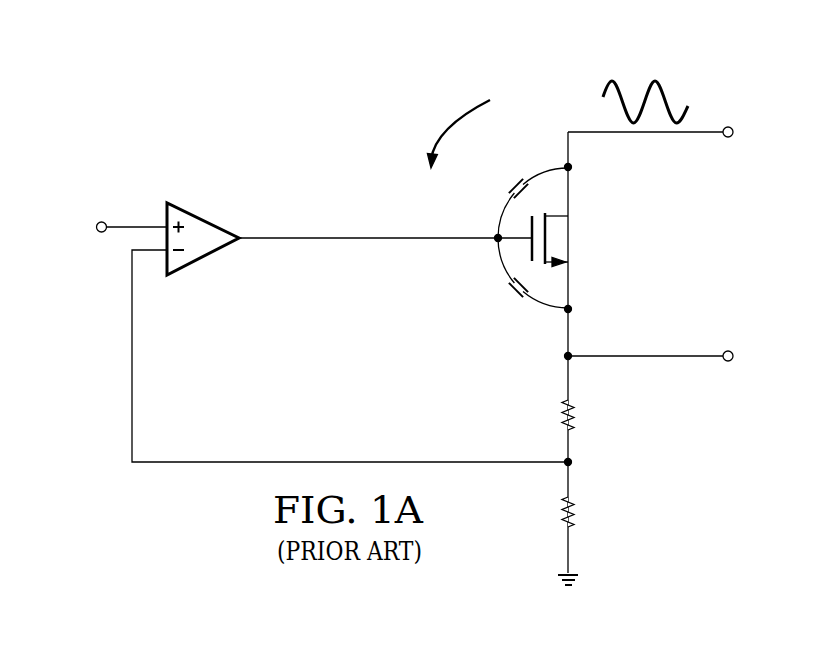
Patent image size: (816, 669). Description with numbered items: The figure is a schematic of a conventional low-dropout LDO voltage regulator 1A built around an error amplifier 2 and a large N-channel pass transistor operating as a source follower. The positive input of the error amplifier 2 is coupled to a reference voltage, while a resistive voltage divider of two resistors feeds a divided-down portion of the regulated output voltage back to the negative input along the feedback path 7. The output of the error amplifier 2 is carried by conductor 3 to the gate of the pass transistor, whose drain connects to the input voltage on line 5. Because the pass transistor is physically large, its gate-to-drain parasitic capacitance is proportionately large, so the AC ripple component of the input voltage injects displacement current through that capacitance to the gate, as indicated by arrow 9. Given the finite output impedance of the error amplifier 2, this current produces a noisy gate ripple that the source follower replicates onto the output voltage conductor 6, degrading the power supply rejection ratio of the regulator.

The low-dropout LDO voltage regulator 1A is at (318, 98).
The error amplifier 2 is at (203, 218).
The conductor 3 is at (271, 242).
The input voltage line (VIN) 5 is at (645, 134).
The VOUT conductor 6 is at (646, 355).
The feedback line 7 is at (350, 462).
The arrow 9 is at (455, 121).